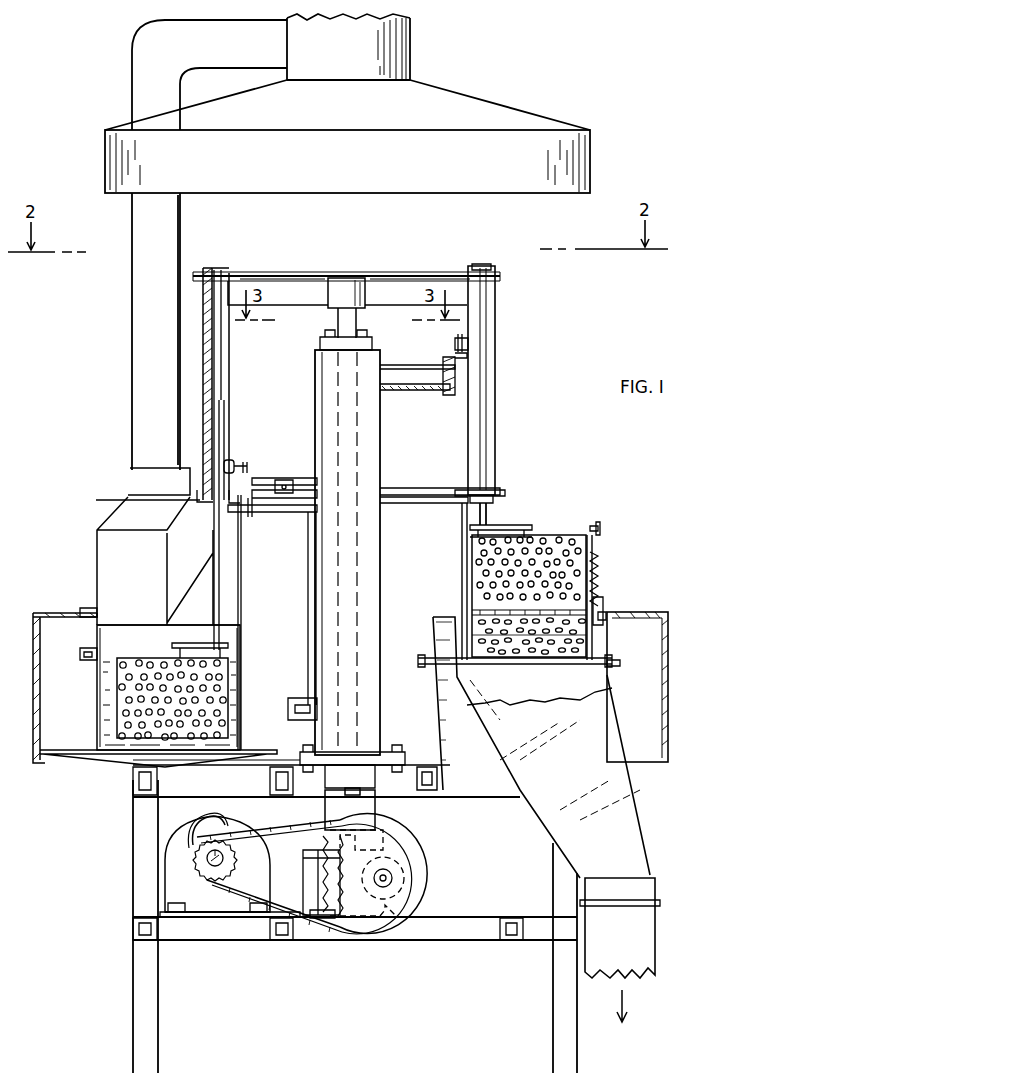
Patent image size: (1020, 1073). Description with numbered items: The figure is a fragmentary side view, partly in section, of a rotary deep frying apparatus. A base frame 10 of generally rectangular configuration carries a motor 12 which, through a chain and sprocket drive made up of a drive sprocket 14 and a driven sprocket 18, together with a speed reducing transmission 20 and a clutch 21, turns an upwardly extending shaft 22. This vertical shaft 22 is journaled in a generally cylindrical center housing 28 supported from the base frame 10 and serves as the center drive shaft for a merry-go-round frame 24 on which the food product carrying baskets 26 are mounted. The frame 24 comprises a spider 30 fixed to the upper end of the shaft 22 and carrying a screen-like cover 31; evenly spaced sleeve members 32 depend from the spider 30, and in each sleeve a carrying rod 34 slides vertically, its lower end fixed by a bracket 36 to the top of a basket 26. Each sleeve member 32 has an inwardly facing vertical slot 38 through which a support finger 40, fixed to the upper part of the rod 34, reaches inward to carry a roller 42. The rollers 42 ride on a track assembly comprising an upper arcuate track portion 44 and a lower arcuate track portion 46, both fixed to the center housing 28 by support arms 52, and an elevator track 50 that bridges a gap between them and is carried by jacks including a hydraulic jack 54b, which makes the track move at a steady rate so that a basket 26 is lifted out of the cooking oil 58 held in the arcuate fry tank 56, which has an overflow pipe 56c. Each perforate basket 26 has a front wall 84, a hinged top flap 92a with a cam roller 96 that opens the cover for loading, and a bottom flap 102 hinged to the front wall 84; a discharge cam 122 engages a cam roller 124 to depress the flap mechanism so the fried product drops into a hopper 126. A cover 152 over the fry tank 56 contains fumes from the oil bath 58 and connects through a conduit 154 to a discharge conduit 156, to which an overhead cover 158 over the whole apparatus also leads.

The base frame 10 is at (118, 903).
The motor 12 is at (187, 842).
The drive sprocket 14 is at (216, 870).
The driven sprocket 18 is at (425, 868).
The speed reducing transmission 20 is at (308, 870).
The clutch 21 is at (330, 815).
The shaft 22 is at (336, 322).
The merry-go-round frame 24 is at (388, 272).
The basket 26 is at (580, 530).
The center housing 28 is at (385, 455).
The spider 30 is at (290, 278).
The screen-like cover 31 is at (322, 278).
The sleeve member 32 is at (217, 350).
The carrying rod 34 is at (220, 428).
The bracket 36 is at (468, 518).
The vertical slot 38 is at (226, 370).
The support finger 40 is at (235, 463).
The roller 42 is at (250, 466).
The upper arcuate track portion 44 is at (462, 360).
The lower arcuate track portion 46 is at (252, 500).
The elevator track 50 is at (305, 478).
The support arm 52 is at (292, 515).
The hydraulic jack 54b is at (315, 628).
The fry tank 56 is at (95, 722).
The overflow pipe 56c is at (88, 650).
The cooking oil 58 is at (100, 690).
The front wall 84 is at (478, 590).
The hinged flap 92a is at (550, 532).
The cam roller 96 is at (598, 528).
The bottom flap 102 is at (544, 642).
The discharge cam 122 is at (605, 605).
The cam roller 124 is at (602, 652).
The hopper 126 is at (572, 770).
The cover 152 is at (100, 515).
The conduit 154 is at (150, 357).
The discharge conduit 156 is at (360, 63).
The overhead cover 158 is at (495, 115).